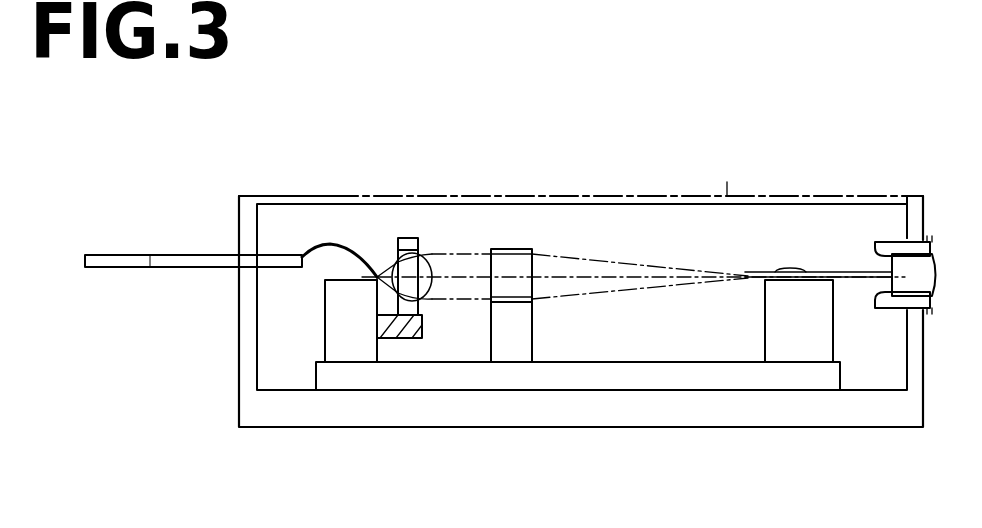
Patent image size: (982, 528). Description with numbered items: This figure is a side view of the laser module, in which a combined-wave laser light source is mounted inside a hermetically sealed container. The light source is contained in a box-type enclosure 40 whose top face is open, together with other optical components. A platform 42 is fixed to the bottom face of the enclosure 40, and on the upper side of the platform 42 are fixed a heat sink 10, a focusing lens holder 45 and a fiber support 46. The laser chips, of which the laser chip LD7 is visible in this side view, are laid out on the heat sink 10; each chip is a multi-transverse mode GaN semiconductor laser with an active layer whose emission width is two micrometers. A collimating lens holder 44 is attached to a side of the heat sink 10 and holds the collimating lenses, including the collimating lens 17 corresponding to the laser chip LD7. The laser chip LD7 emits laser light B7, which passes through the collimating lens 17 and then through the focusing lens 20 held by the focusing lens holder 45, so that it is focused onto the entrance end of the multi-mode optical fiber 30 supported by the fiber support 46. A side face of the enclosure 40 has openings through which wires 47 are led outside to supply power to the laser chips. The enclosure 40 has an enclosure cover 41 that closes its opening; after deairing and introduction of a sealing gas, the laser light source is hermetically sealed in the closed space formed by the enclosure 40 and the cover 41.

The laser chip LD7 is at (376, 276).
The collimating lens 17 is at (413, 237).
The focusing lens 20 is at (513, 255).
The laser light B7 is at (594, 265).
The enclosure cover 41 is at (729, 190).
The multi-mode optical fiber 30 is at (848, 270).
The wires 47 is at (131, 252).
The heat sink 10 is at (347, 350).
The collimating lens holder 44 is at (403, 338).
The focusing lens holder 45 is at (510, 345).
The enclosure 40 is at (652, 415).
The platform 42 is at (718, 375).
The fiber support 46 is at (800, 345).